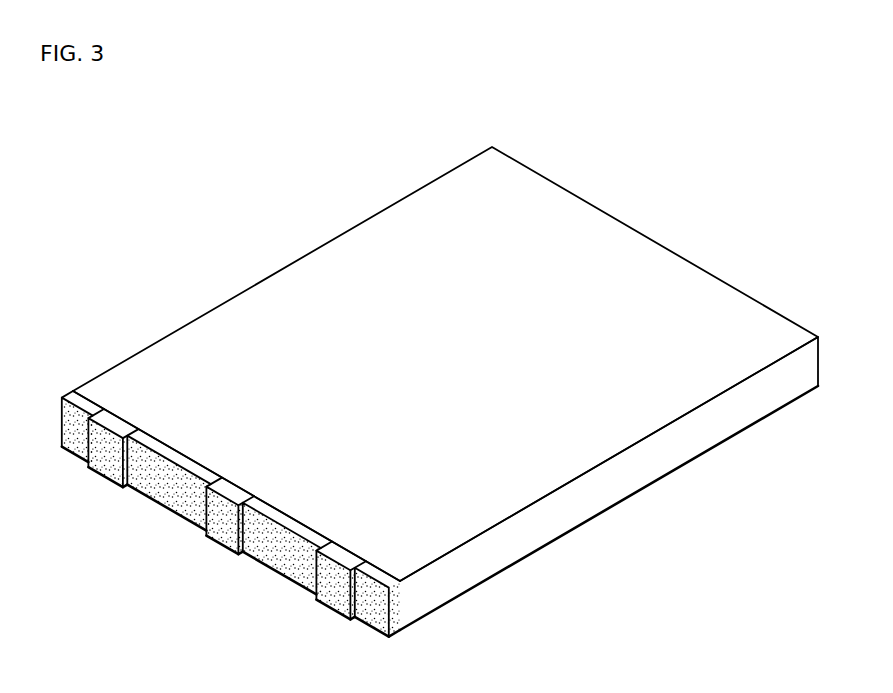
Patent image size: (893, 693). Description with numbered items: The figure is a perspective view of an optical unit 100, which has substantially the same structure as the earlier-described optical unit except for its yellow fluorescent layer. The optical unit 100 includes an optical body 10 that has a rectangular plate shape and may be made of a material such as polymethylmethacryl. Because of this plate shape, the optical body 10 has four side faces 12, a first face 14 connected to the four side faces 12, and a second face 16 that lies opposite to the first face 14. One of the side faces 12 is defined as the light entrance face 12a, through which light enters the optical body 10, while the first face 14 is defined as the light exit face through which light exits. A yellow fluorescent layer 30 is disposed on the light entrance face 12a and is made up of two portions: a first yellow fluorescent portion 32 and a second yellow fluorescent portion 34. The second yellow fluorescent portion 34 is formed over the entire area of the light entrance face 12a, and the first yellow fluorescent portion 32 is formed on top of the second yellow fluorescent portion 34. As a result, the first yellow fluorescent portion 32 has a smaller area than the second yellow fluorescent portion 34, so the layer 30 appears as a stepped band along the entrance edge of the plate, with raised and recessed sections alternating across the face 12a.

The optical unit 100 is at (240, 218).
The optical body 10 is at (225, 321).
The side faces 12 is at (569, 515).
The light entrance face 12a is at (292, 515).
The first face 14 is at (672, 420).
The second face 16 is at (665, 475).
The yellow fluorescent layer 30 is at (130, 540).
The first yellow fluorescent portion 32 is at (337, 597).
The second yellow fluorescent portion 34 is at (375, 616).